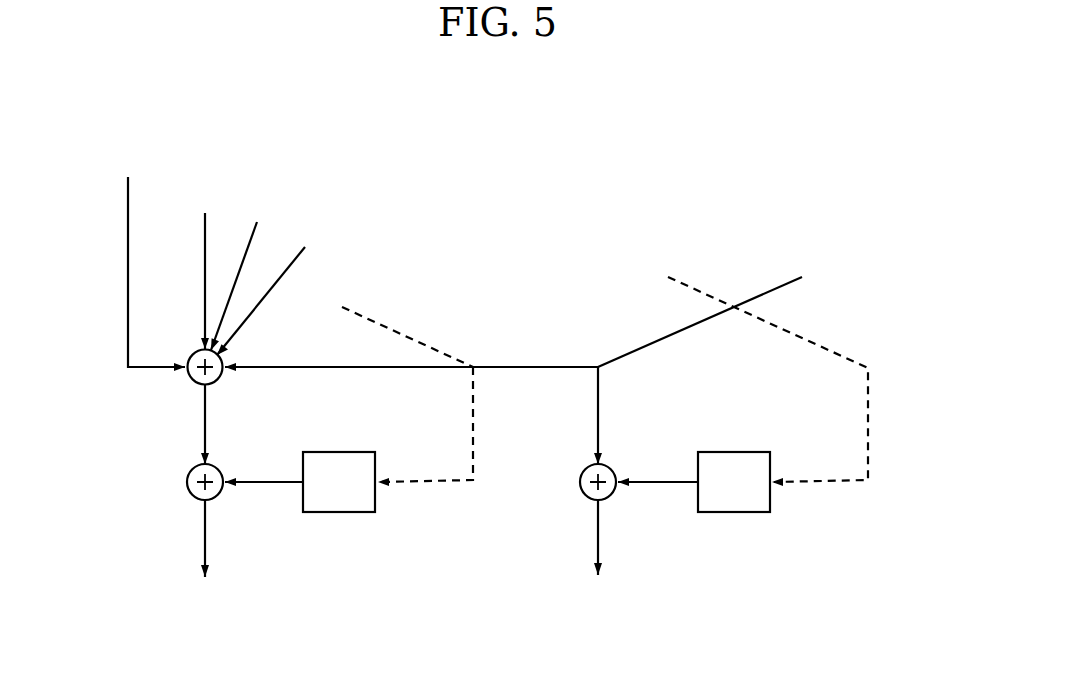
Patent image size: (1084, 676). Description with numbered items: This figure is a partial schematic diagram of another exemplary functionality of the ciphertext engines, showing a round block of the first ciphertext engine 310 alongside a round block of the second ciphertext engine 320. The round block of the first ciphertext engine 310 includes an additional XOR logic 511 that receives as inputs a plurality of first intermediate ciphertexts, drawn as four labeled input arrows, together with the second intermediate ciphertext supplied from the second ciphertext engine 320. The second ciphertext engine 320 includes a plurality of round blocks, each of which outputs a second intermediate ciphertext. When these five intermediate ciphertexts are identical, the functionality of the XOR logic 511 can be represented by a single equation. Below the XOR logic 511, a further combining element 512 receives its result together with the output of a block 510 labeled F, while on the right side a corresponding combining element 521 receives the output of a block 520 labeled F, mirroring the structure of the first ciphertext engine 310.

The first ciphertext engine 310 is at (138, 152).
The second ciphertext engine 320 is at (862, 250).
The filter F (first) 510 is at (318, 451).
The XOR logic 511 is at (219, 379).
The second adder 512 is at (216, 497).
The filter F (second) 520 is at (712, 451).
The third adder 521 is at (609, 497).